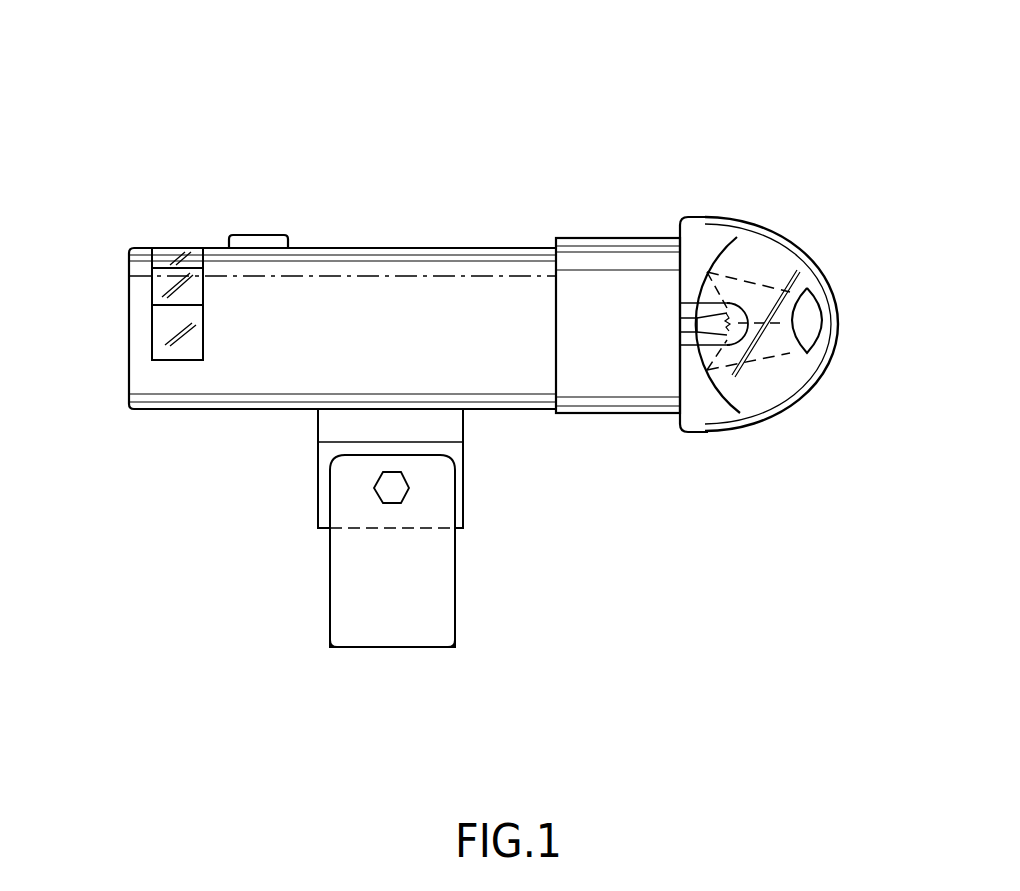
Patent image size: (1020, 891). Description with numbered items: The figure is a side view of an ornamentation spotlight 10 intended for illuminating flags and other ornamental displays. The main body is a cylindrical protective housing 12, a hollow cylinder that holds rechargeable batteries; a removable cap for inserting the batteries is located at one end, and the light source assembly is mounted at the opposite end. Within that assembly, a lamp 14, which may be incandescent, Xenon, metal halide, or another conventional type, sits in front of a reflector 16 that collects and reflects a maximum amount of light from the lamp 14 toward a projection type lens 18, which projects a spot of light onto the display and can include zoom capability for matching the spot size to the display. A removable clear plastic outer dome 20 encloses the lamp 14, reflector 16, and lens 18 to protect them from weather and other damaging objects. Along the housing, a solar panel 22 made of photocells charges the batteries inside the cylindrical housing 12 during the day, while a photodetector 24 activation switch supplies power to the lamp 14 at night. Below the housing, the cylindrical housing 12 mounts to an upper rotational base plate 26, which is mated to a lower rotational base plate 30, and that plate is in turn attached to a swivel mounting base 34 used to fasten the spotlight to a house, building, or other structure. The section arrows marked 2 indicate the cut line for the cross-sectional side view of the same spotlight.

The ornamentation spotlight 10 is at (288, 100).
The cylindrical protective housing 12 is at (478, 248).
The lamp 14 is at (730, 338).
The reflector 16 is at (714, 262).
The projection type lens 18 is at (817, 337).
The removable clear plastic outer dome 20 is at (818, 272).
The solar panel 22 is at (185, 277).
The photodetector activation switch 24 is at (257, 235).
The upper rotational base plate 26 is at (318, 420).
The lower rotational base plate 30 is at (318, 490).
The swivel mounting base 34 is at (455, 603).
The section line 2- 2 is at (100, 278).